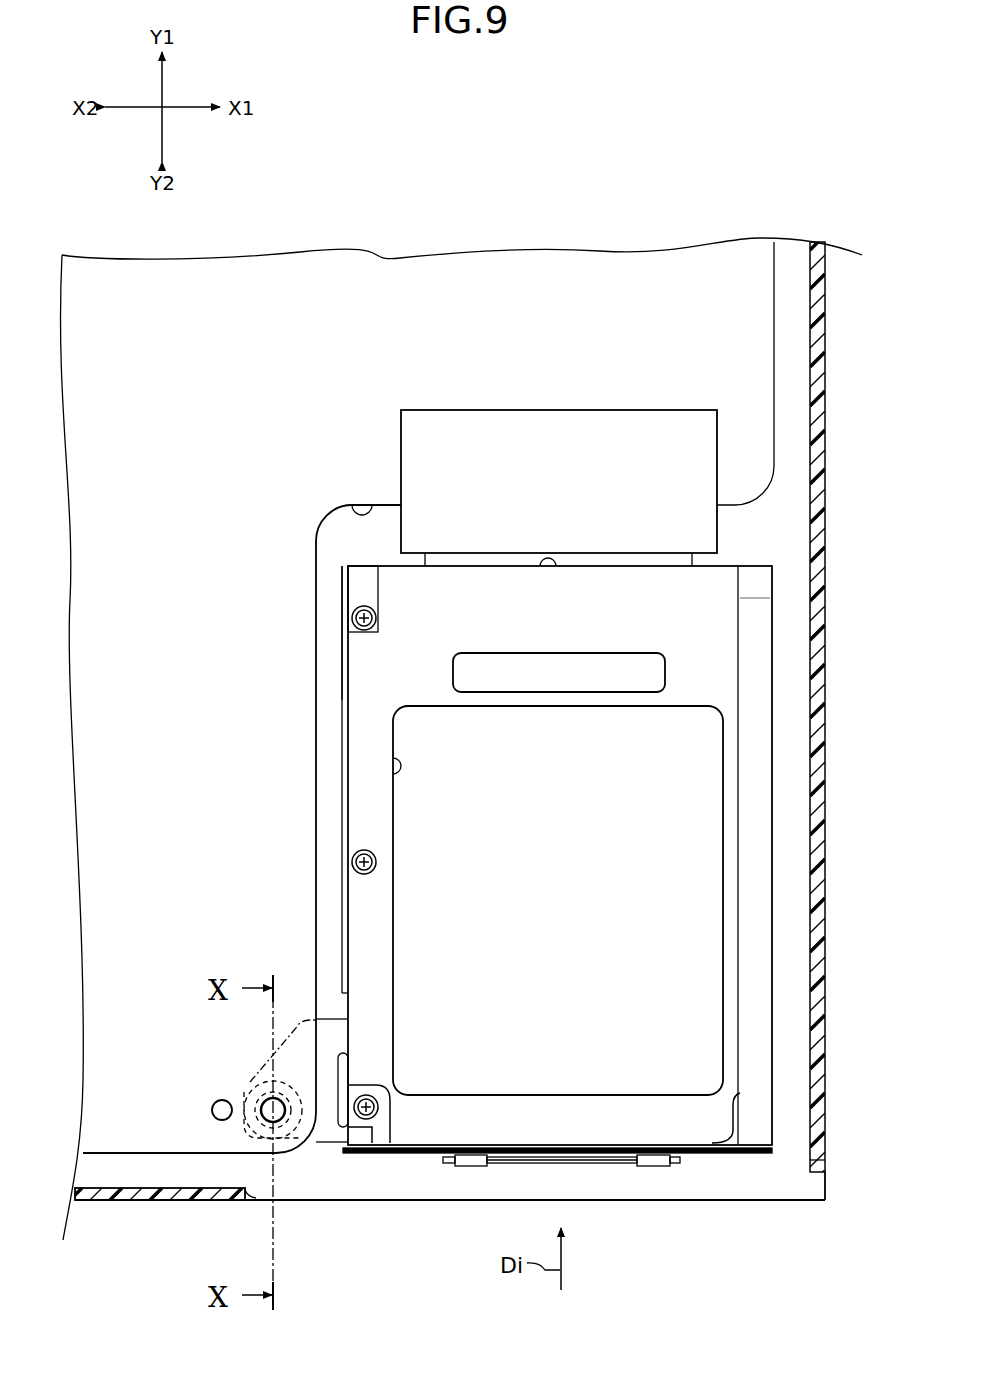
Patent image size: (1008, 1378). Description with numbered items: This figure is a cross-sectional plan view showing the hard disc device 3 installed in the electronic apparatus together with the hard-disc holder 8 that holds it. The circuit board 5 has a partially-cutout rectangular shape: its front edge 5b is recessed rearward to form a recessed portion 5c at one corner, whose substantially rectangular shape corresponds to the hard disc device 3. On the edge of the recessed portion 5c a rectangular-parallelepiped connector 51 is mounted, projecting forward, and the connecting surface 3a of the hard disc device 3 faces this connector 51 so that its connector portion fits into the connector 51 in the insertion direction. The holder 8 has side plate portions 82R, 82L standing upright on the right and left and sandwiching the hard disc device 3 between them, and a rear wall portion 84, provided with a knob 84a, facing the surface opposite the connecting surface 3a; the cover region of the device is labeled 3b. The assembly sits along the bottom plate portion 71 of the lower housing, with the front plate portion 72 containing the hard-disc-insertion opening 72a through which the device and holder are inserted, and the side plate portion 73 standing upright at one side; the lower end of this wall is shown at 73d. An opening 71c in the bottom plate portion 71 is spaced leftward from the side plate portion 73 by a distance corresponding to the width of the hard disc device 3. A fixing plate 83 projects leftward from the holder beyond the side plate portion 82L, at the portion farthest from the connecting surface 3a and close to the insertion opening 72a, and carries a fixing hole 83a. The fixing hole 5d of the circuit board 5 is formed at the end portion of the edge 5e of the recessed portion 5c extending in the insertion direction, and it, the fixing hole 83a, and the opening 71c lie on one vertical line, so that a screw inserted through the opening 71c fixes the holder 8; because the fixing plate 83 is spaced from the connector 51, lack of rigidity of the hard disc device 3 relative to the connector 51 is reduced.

The hard disc device 3 is at (384, 672).
The connecting surface 3a is at (552, 574).
The cover of unit 3b is at (574, 887).
The circuit board 5 is at (208, 401).
The front edge 5b is at (118, 1160).
The recessed portion 5c is at (362, 497).
The fixing hole 5d is at (262, 1110).
The edge 5e is at (317, 903).
The hard-disc holder 8 is at (338, 688).
The connector 51 is at (555, 432).
The bottom plate portion 71 is at (390, 1200).
The opening 71c is at (258, 1088).
The front plate portion 72 is at (133, 1200).
The hard-disc-insertion opening 72a is at (251, 1198).
The side plate portion 73 is at (818, 492).
The side wall lower end 73d is at (818, 1162).
The side plate portion 82L is at (342, 787).
The side plate portion 82R is at (773, 906).
The fixing plate 83 is at (328, 1128).
The fixing hole 83a is at (244, 1132).
The rear wall portion 84 is at (698, 1153).
The knob 84a is at (610, 1166).